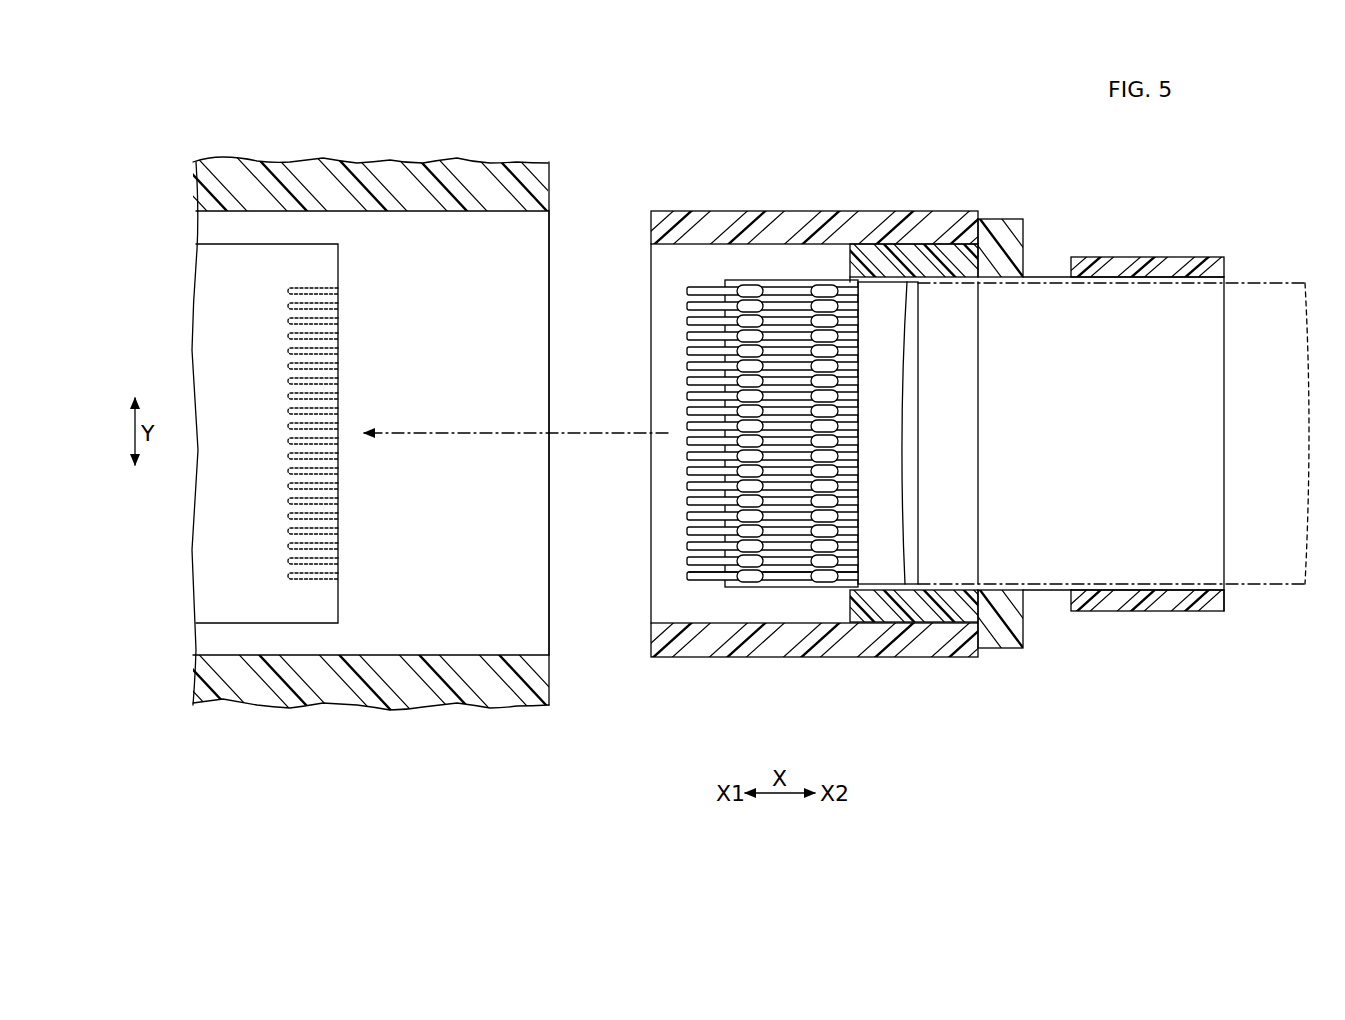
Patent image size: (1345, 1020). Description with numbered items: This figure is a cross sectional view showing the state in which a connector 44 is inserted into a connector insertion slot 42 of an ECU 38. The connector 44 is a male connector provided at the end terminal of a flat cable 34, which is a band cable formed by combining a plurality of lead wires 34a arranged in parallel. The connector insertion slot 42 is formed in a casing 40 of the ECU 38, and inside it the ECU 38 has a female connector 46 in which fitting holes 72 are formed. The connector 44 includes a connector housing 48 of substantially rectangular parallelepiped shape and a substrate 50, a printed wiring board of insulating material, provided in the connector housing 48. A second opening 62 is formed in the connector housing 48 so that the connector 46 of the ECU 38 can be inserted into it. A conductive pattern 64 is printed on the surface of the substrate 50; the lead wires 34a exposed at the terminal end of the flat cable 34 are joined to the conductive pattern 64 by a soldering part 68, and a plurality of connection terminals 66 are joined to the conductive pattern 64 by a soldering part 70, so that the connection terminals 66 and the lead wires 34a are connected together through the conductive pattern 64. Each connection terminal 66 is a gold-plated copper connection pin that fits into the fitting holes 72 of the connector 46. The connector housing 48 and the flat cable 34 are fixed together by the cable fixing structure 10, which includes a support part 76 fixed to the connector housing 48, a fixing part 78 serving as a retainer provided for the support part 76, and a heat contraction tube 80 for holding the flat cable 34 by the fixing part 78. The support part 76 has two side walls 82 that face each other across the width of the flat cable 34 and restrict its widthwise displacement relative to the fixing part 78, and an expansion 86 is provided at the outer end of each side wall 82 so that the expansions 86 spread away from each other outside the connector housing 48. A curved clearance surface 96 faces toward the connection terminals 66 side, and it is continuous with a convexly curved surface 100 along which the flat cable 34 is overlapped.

The cable fixing structure 10 is at (1085, 190).
The flat cable 34 is at (883, 572).
The lead wires 34a is at (843, 580).
The ECU 38 is at (329, 152).
The casing 40 is at (535, 187).
The connector insertion slot 42 is at (515, 298).
The connector 44 is at (806, 400).
The connector 46 is at (325, 275).
The connector housing 48 is at (691, 211).
The substrate 50 is at (768, 580).
The second opening 62 is at (665, 598).
The conductive pattern 64 is at (787, 580).
The connection terminals 66 is at (702, 580).
The soldering part 68 is at (817, 582).
The soldering part 70 is at (755, 580).
The fitting holes 72 is at (302, 584).
The support part 76 is at (1011, 208).
The fixing part 78 is at (1048, 593).
The heat contraction tube 80 is at (1157, 598).
The side walls 82 is at (898, 250).
The expansion 86 is at (1010, 237).
The clearance surface 96 is at (960, 473).
The convexly curved surface 100 is at (1208, 428).